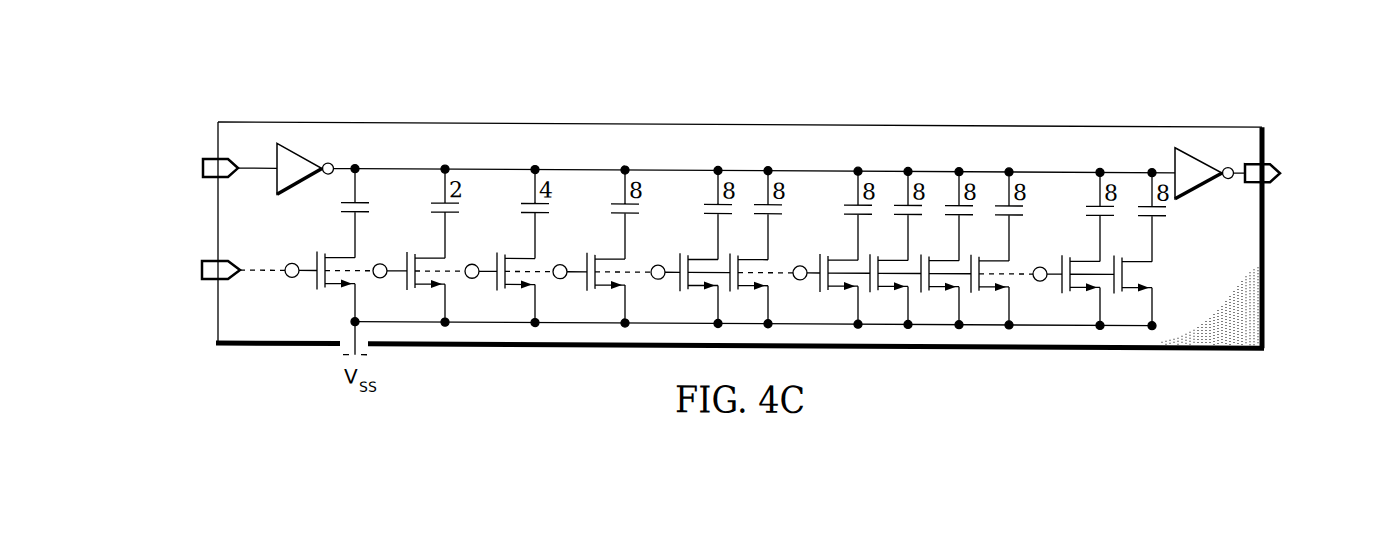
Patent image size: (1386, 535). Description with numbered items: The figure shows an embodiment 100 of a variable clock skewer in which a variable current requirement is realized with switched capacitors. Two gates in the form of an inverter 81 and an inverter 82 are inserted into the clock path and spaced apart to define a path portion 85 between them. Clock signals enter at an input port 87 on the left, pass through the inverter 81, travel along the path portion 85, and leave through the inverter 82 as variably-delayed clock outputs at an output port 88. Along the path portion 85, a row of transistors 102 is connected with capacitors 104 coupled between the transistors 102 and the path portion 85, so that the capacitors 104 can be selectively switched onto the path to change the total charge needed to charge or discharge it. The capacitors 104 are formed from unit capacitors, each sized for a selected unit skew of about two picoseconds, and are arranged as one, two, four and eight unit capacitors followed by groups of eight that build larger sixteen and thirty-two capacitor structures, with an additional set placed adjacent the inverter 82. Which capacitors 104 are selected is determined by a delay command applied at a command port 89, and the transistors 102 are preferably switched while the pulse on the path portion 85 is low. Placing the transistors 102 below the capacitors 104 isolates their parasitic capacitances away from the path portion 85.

The embodiment of the variable clock skewer 100 is at (893, 115).
The path portion 85 is at (495, 163).
The inverter 81 is at (316, 179).
The inverter 82 is at (1210, 182).
The input port 87 is at (210, 157).
The output port 88 is at (1272, 185).
The command port 89 is at (213, 290).
The transistors 102 is at (333, 292).
The capacitors 104 is at (345, 221).